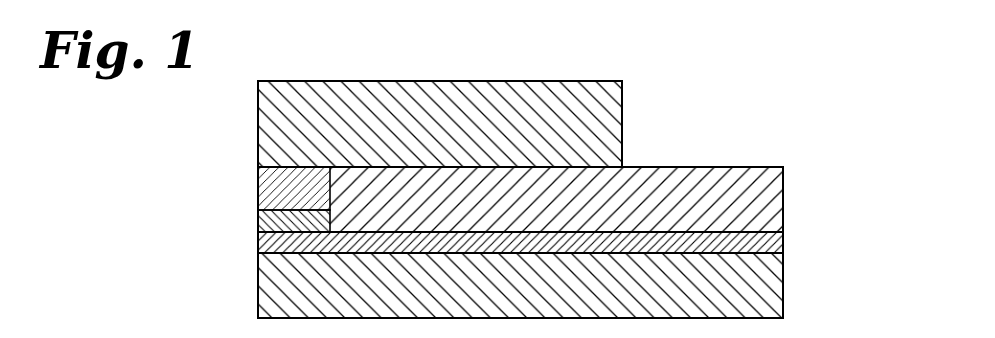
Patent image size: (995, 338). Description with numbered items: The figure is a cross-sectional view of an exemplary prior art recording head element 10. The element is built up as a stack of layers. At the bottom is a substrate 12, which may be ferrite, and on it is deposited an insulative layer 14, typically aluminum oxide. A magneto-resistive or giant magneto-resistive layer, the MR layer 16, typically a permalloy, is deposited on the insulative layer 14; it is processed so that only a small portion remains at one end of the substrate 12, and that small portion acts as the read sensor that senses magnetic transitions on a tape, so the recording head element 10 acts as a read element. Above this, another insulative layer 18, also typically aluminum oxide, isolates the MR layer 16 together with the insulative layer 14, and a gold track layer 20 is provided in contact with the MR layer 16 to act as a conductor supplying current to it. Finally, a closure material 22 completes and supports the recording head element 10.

The recording head element 10 is at (781, 83).
The substrate 12 is at (757, 294).
The insulative layer 14 is at (748, 245).
The MR layer 16 is at (295, 222).
The insulative layer 18 is at (295, 201).
The gold track layer 20 is at (750, 209).
The closure material 22 is at (593, 141).